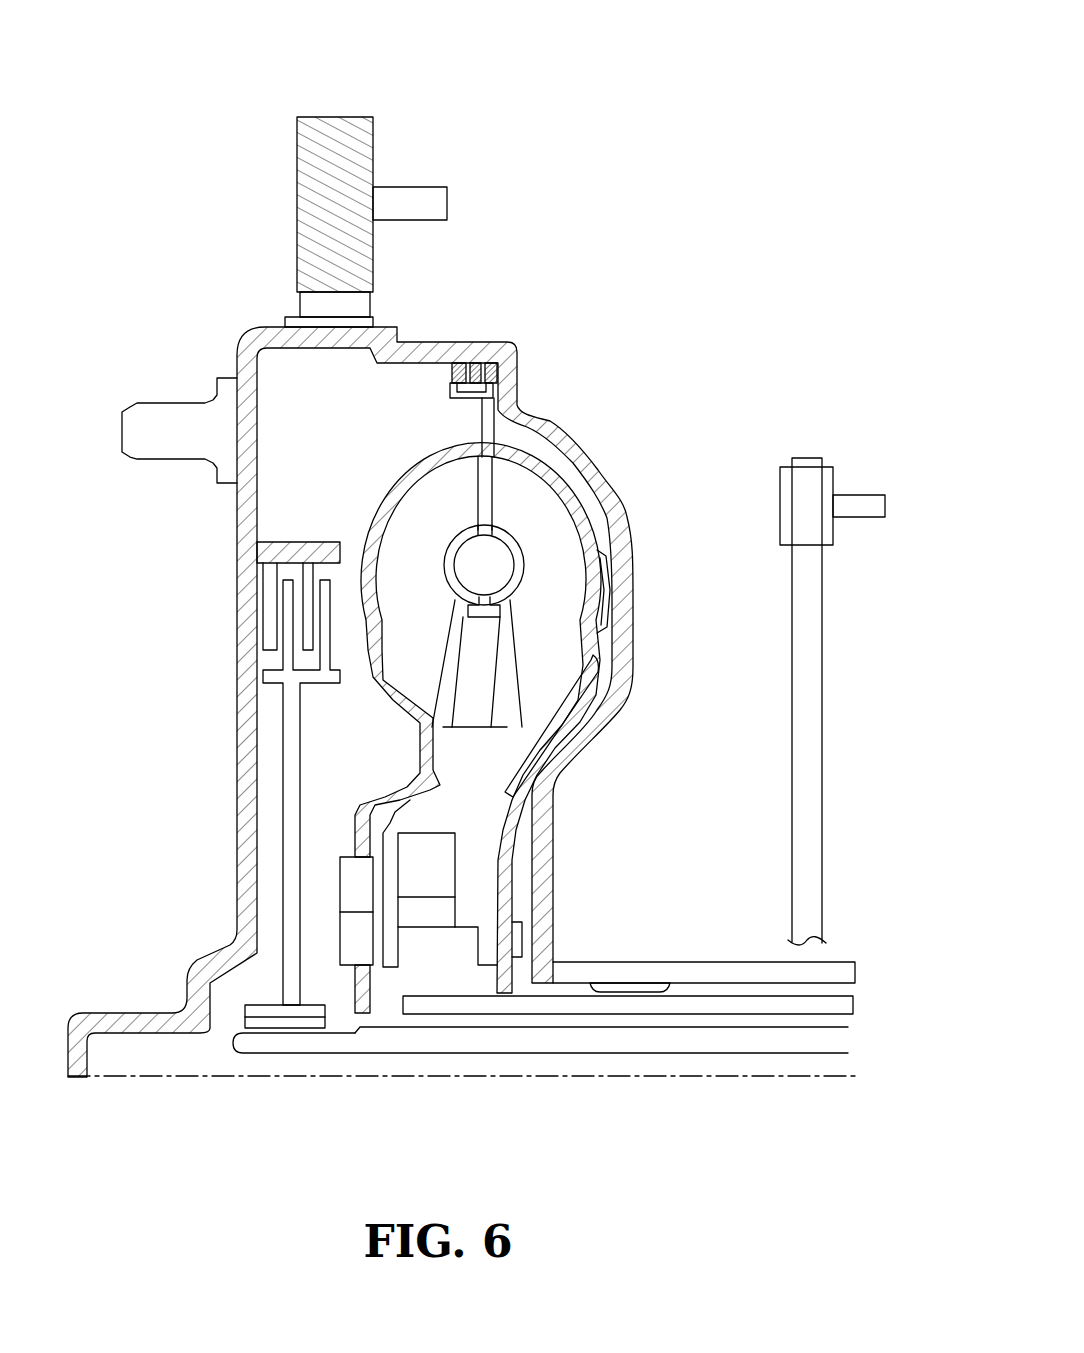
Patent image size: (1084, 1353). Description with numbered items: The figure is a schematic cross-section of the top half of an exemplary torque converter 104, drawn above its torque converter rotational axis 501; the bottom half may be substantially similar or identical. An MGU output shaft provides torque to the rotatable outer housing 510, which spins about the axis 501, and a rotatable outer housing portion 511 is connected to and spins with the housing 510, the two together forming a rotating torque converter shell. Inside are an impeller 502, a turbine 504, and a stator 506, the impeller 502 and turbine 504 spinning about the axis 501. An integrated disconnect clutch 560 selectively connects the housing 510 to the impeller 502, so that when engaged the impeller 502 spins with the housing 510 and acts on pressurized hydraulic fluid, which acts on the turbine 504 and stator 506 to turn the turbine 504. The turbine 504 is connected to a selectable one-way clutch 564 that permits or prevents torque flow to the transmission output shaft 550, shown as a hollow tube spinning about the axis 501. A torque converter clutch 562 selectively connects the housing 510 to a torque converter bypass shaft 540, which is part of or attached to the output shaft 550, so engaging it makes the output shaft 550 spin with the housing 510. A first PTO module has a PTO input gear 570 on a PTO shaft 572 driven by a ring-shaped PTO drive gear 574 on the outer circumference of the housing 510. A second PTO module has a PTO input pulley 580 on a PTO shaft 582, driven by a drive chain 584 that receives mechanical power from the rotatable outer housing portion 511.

The torque converter 104 is at (762, 303).
The torque converter rotational axis 501 is at (442, 1080).
The impeller 502 is at (590, 530).
The turbine 504 is at (395, 490).
The stator 506 is at (500, 688).
The rotatable outer housing 510 is at (555, 423).
The rotatable outer housing portion 511 is at (638, 962).
The torque converter bypass shaft 540 is at (290, 1045).
The transmission output shaft 550 is at (568, 1040).
The disconnect clutch 560 is at (498, 367).
The torque converter clutch 562 is at (275, 635).
The selectable one-way clutch 564 is at (337, 895).
The PTO input gear 570 is at (345, 117).
The PTO shaft 572 is at (415, 187).
The PTO drive gear 574 is at (292, 305).
The PTO input pulley 580 is at (838, 535).
The PTO shaft 582 is at (852, 495).
The drive chain 584 is at (815, 730).